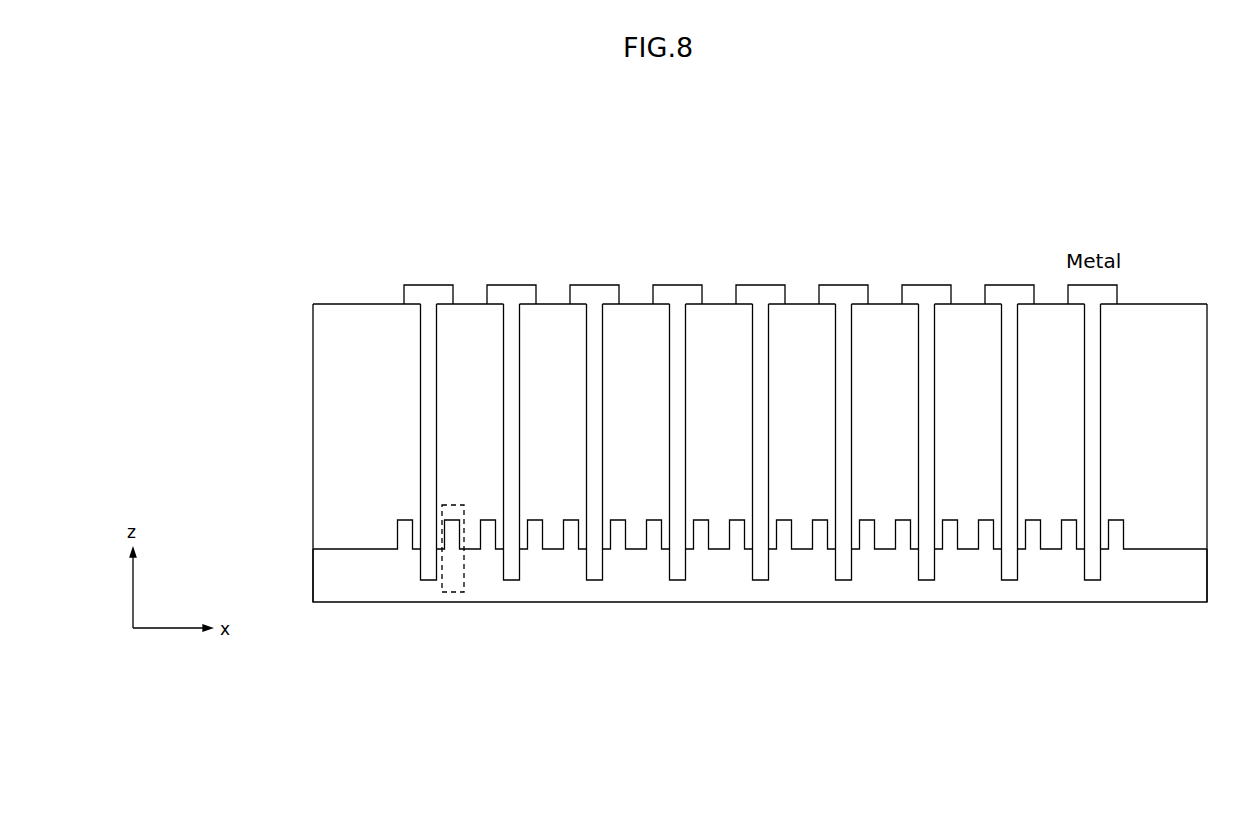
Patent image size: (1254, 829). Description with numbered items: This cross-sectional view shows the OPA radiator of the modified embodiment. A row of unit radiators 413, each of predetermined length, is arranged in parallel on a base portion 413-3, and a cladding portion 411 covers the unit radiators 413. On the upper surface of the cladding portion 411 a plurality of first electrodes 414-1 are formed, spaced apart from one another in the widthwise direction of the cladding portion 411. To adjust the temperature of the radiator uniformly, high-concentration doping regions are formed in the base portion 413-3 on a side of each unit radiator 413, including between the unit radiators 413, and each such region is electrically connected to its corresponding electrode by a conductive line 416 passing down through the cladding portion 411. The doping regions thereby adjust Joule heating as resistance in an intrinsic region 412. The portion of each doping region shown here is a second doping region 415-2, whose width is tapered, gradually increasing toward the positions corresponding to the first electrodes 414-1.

The cladding portion 411 is at (336, 359).
The conductive line 416 is at (426, 418).
The first electrode 414-1 is at (516, 291).
The intrinsic region 412 is at (452, 582).
The unit radiator 413 is at (535, 533).
The second doping region 415-2 is at (676, 573).
The base portion 413-3 is at (617, 592).